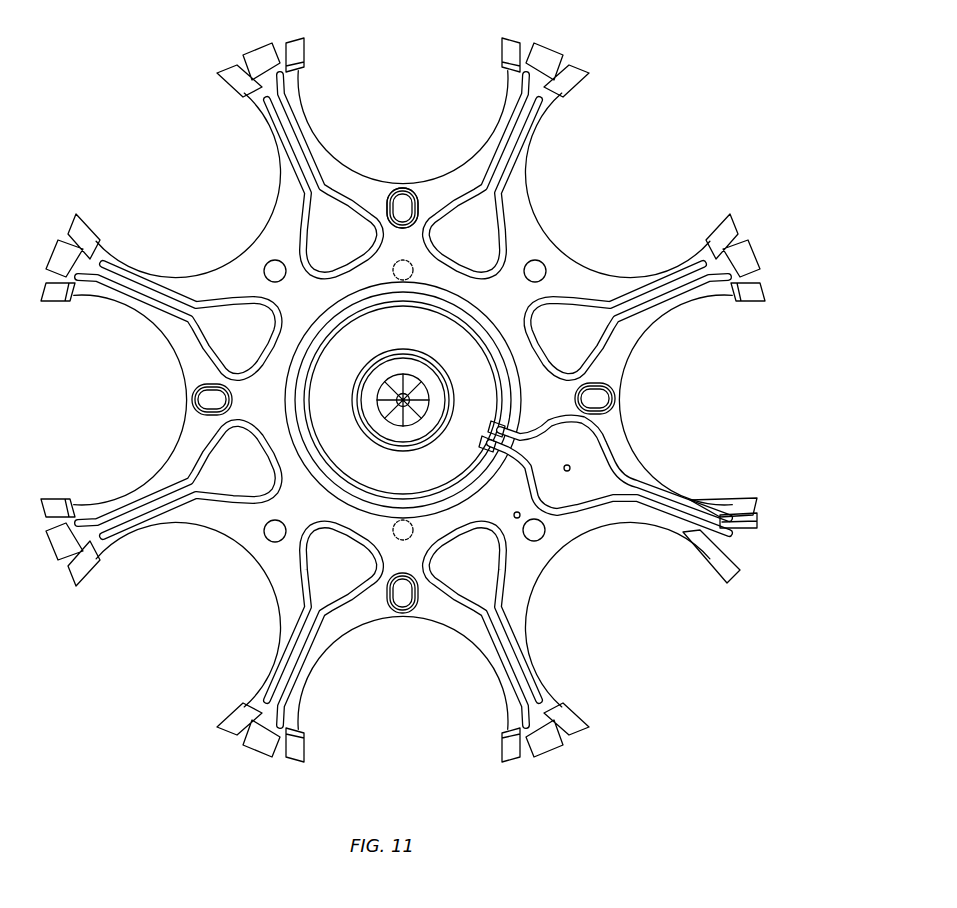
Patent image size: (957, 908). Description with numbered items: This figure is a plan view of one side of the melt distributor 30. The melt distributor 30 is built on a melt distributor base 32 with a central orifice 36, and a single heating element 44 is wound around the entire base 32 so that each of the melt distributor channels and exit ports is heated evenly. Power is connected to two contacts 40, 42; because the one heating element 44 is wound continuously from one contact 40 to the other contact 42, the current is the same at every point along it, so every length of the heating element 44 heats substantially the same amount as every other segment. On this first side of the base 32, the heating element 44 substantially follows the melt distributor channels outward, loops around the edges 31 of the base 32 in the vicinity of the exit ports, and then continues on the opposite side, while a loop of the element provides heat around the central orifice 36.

The melt distributor 30 is at (706, 114).
The edges 31 is at (735, 224).
The melt distributor base 32 is at (405, 183).
The central orifice 36 is at (406, 400).
The contact 40 is at (497, 427).
The contact 42 is at (485, 444).
The heating element 44 is at (130, 300).